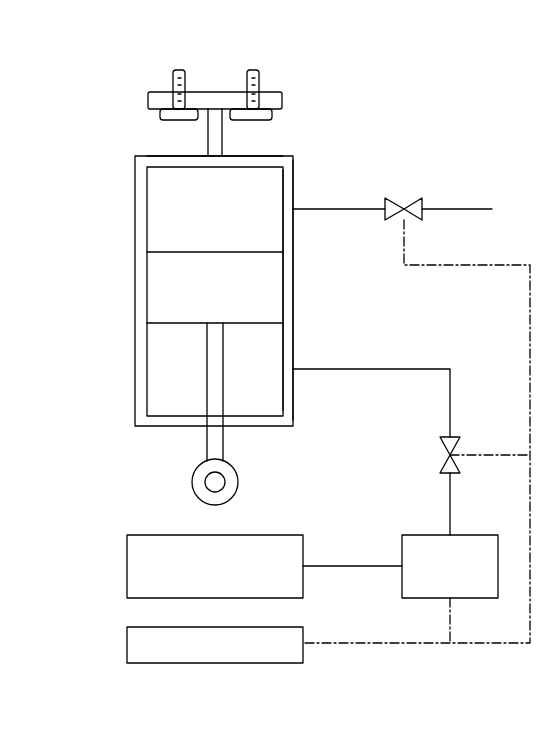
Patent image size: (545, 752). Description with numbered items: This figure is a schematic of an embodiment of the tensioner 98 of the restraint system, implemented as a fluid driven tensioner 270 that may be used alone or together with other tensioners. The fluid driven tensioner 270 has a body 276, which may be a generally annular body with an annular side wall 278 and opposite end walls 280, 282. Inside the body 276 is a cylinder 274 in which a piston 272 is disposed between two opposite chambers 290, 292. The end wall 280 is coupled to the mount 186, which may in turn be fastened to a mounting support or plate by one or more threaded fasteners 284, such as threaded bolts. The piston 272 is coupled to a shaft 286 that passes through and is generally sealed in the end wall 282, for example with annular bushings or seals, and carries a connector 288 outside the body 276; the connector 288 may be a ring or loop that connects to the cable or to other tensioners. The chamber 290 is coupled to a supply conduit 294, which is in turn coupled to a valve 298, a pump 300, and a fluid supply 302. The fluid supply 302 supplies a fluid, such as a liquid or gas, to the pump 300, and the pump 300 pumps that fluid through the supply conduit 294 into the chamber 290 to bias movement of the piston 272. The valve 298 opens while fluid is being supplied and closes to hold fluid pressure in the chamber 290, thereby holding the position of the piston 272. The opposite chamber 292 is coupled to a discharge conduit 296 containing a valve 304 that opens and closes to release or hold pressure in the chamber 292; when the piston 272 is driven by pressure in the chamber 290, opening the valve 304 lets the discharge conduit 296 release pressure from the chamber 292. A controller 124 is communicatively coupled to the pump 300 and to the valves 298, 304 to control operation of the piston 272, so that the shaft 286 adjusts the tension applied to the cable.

The tensioner 98 is at (345, 57).
The fluid driven tensioner 270 is at (304, 94).
The mount 186 is at (215, 91).
The threaded fastener 284 is at (254, 78).
The end wall 280 is at (255, 156).
The body 276 is at (296, 163).
The cylinder 274 is at (287, 204).
The annular side wall 278 is at (296, 290).
The chamber 292 is at (202, 197).
The piston 272 is at (202, 258).
The chamber 290 is at (273, 378).
The shaft 286 is at (205, 395).
The end wall 282 is at (152, 427).
The connector 288 is at (192, 487).
The discharge conduit 296 is at (456, 209).
The valve 304 is at (410, 222).
The supply conduit 294 is at (451, 402).
The valve 298 is at (445, 460).
The pump 300 is at (470, 535).
The fluid supply 302 is at (127, 566).
The controller 124 is at (127, 645).